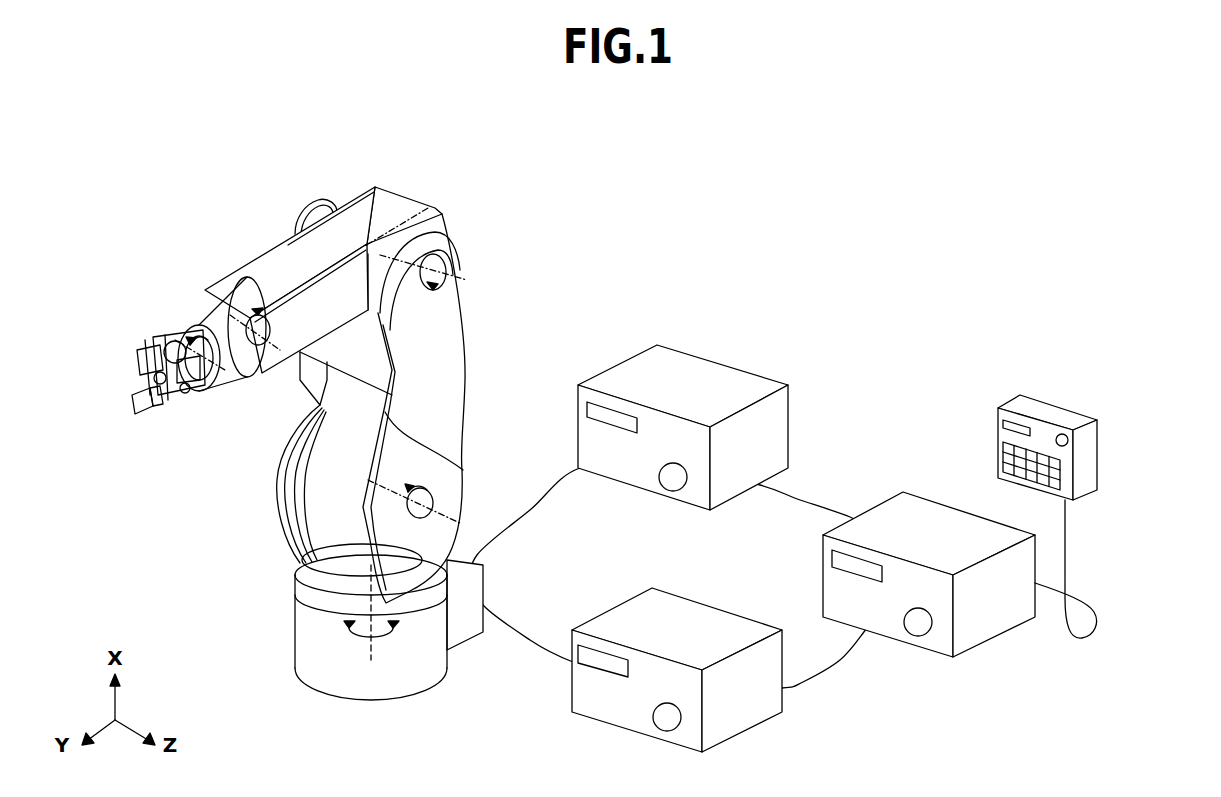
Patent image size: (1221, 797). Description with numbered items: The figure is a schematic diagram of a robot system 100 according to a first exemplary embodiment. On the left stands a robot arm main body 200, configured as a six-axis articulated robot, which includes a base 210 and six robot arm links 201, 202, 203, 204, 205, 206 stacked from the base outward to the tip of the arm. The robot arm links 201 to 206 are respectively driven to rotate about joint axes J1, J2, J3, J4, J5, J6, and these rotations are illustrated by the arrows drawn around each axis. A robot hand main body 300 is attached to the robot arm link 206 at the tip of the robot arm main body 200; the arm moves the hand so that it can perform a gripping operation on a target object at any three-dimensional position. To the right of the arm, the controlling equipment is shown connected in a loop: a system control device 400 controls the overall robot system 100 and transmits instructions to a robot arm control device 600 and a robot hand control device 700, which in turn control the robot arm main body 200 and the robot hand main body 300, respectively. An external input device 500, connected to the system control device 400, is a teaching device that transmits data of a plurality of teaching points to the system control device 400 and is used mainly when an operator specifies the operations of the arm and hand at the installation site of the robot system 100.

The robot system 100 is at (700, 152).
The robot arm main body 200 is at (314, 435).
The robot arm link 201 is at (333, 560).
The robot arm link 202 is at (446, 356).
The robot arm link 203 is at (370, 200).
The robot arm link 204 is at (282, 258).
The robot arm link 205 is at (232, 378).
The robot arm link 206 is at (180, 325).
The base 210 is at (405, 672).
The robot hand main body 300 is at (147, 432).
The system control device 400 is at (890, 515).
The external input device 500 is at (1090, 455).
The robot arm control device 600 is at (710, 380).
The robot hand control device 700 is at (707, 630).
The joint axis J1 is at (371, 660).
The joint axis J2 is at (445, 497).
The joint axis J3 is at (450, 276).
The joint axis J4 is at (407, 210).
The joint axis J5 is at (190, 305).
The joint axis J6 is at (163, 338).